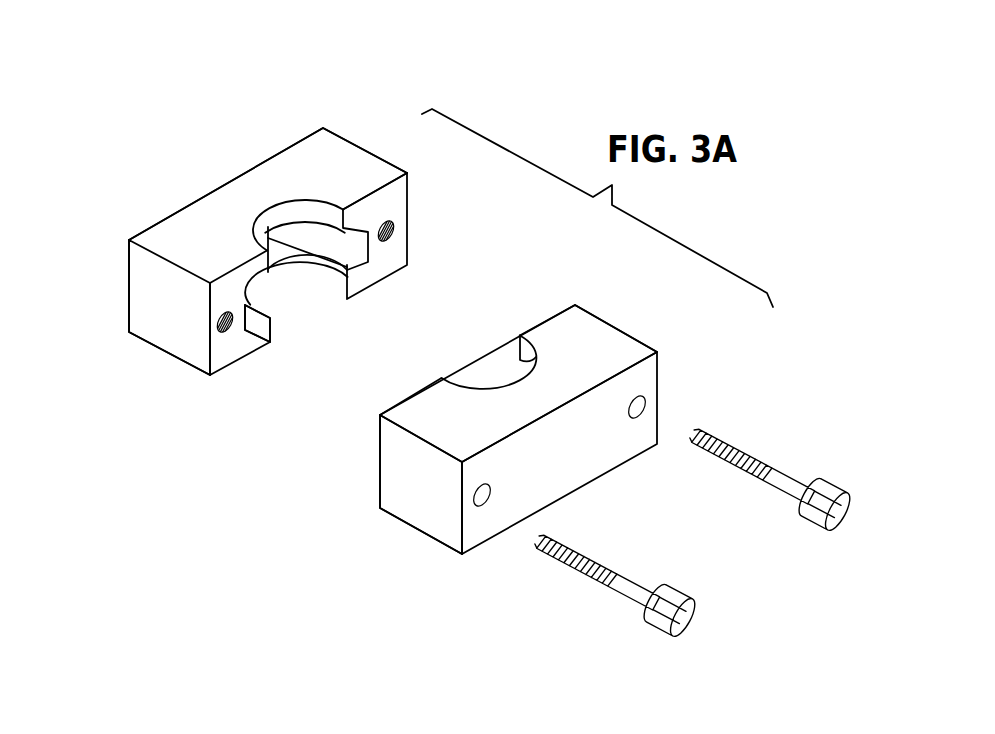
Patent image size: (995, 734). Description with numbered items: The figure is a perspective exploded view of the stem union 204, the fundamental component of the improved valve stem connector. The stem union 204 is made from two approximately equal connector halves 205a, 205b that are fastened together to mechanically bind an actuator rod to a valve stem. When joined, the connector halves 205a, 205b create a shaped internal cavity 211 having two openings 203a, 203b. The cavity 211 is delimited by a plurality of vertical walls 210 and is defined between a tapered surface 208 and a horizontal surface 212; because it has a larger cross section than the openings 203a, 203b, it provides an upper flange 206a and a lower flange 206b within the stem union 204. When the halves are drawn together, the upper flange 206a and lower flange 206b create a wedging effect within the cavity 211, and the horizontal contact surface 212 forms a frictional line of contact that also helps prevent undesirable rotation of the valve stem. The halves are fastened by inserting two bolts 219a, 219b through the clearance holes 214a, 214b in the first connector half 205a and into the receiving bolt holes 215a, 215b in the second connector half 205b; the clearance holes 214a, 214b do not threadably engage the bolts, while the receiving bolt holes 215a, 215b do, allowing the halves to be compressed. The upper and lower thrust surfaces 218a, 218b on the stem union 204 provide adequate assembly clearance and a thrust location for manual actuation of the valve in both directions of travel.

The stem union 204 is at (128, 486).
The first connector half 205a is at (413, 500).
The second connector half 205b is at (175, 327).
The upper opening 203a is at (266, 200).
The lower opening 203b is at (293, 323).
The upper flange 206a is at (298, 210).
The lower flange 206b is at (347, 292).
The tapered surface 208 is at (364, 224).
The vertical walls 210 is at (360, 247).
The shaped internal cavity 211 is at (307, 271).
The horizontal contact surface 212 is at (349, 265).
The first clearance hole 214a is at (647, 407).
The second clearance hole 214b is at (487, 505).
The first receiving bolt hole 215a is at (394, 237).
The second receiving bolt hole 215b is at (236, 327).
The upper thrust surface 218a is at (163, 230).
The lower thrust surface 218b is at (143, 343).
The first bolt 219a is at (833, 518).
The second bolt 219b is at (679, 619).